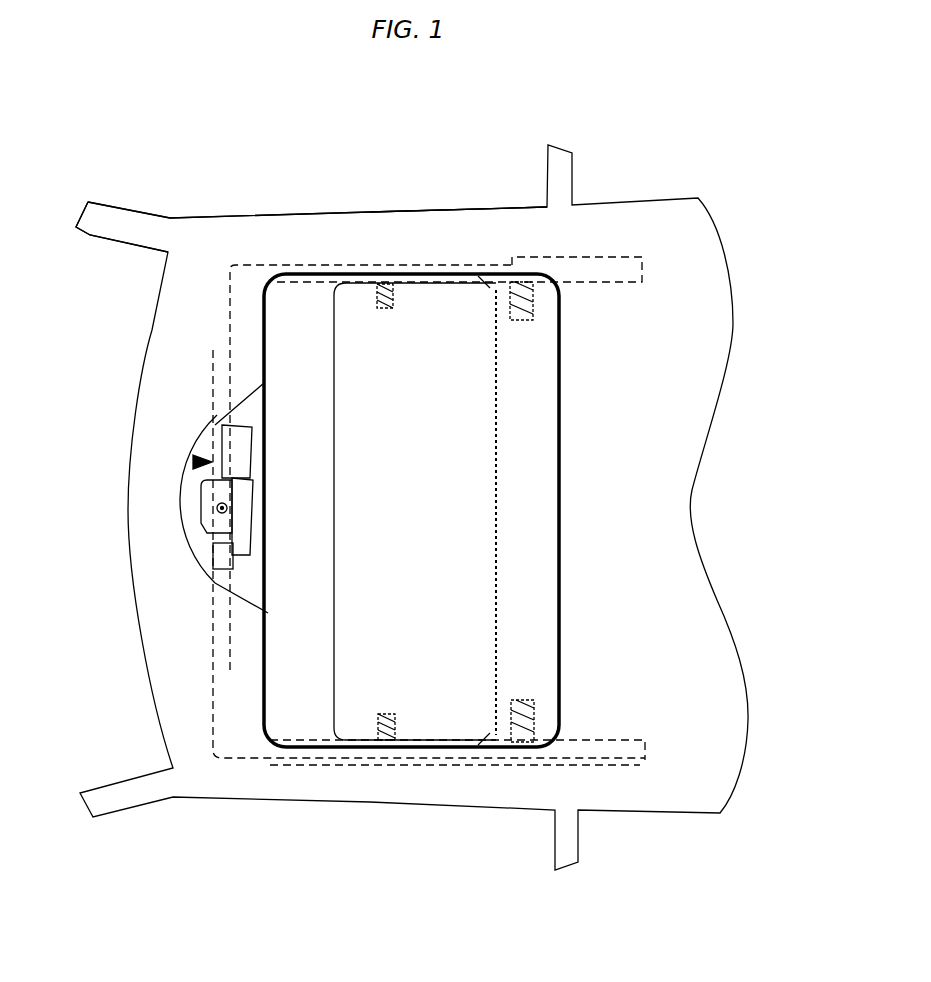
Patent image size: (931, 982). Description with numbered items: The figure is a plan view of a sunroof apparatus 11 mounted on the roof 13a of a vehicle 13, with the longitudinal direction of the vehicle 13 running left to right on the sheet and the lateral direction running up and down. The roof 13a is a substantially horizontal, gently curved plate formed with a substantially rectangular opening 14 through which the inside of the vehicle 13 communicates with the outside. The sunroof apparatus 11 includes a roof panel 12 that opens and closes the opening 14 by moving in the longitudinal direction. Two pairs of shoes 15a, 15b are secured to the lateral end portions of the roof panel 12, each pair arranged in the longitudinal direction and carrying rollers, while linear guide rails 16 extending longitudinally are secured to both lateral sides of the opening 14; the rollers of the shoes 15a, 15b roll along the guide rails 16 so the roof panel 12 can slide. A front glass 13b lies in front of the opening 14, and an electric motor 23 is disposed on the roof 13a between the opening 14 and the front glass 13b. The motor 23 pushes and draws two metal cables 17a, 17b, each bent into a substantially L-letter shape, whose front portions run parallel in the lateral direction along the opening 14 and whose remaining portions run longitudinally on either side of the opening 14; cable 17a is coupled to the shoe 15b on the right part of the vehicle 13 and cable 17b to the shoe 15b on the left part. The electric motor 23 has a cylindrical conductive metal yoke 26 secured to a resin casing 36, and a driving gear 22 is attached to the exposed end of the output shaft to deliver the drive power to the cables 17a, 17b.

The sunroof apparatus 11 is at (458, 205).
The roof panel 12 is at (537, 515).
The vehicle 13 is at (685, 196).
The roof 13a is at (292, 232).
The front glass 13b is at (105, 303).
The opening 14 is at (312, 512).
The shoe 15a is at (394, 262).
The shoe 15b is at (546, 272).
The guide rail 16 is at (612, 257).
The cable 17a is at (231, 262).
The cable 17b is at (214, 760).
The driving gear 22 is at (212, 501).
The electric motor 23 is at (192, 462).
The yoke 26 is at (243, 443).
The casing 36 is at (233, 538).